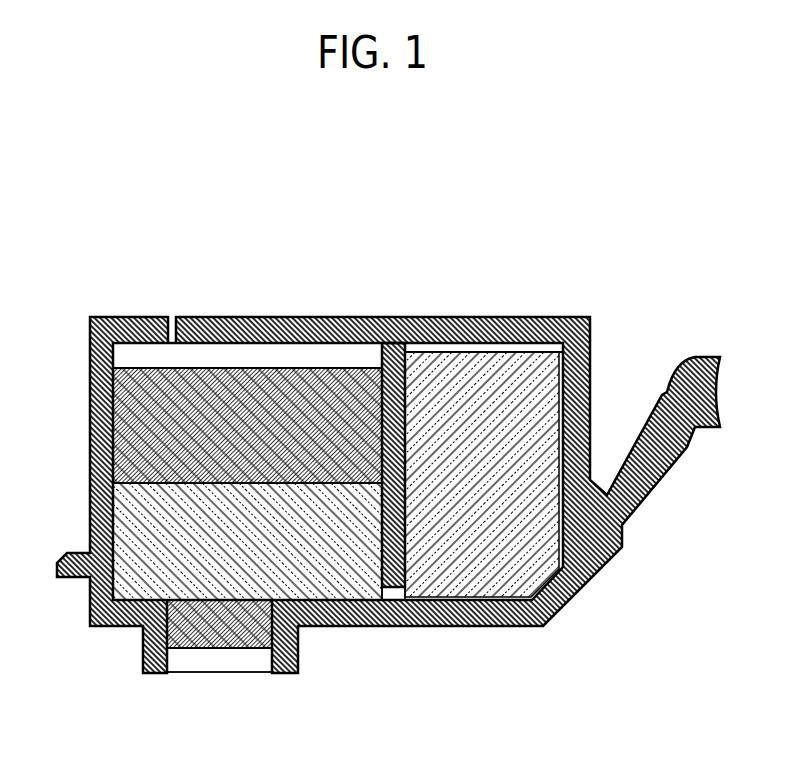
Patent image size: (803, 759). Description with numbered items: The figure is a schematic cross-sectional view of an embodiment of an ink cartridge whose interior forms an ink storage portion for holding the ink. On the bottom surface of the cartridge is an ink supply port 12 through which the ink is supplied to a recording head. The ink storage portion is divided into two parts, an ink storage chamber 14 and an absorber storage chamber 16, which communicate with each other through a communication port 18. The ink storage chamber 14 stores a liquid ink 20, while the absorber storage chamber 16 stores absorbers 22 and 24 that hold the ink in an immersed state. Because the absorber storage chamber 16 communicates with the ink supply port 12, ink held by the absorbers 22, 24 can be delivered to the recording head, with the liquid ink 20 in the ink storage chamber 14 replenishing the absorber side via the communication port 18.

The ink supply port 12 is at (223, 662).
The ink storage chamber 14 is at (530, 350).
The absorber storage chamber 16 is at (233, 358).
The communication port 18 is at (395, 598).
The liquid ink 20 is at (510, 568).
The absorber 22 is at (130, 523).
The absorber 24 is at (163, 423).